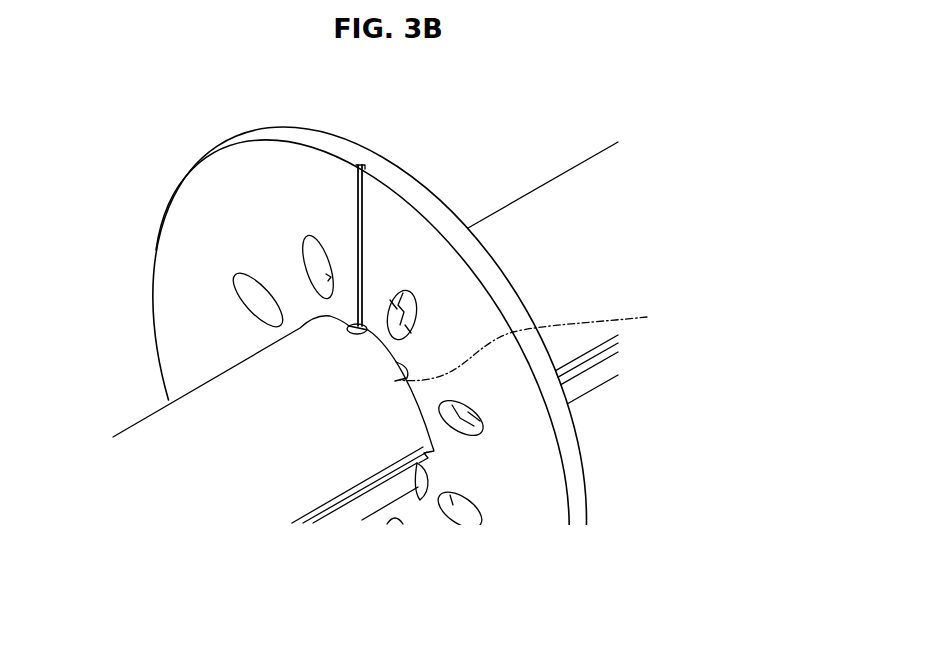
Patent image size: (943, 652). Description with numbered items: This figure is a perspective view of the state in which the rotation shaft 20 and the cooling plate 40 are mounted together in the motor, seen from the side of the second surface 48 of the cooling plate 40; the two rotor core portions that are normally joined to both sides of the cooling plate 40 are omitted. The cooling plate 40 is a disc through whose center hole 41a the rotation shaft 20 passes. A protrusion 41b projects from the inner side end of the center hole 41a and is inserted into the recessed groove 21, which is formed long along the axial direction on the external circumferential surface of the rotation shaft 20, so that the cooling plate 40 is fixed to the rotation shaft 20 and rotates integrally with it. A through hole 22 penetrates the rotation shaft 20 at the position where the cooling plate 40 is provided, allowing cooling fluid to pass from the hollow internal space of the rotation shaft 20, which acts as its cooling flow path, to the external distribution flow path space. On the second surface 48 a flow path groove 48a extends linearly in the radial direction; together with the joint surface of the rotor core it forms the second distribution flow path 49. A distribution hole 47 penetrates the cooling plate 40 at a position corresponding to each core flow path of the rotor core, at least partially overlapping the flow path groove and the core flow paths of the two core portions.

The rotation shaft 20 is at (537, 179).
The recessed groove 21 is at (340, 498).
The through hole 22 is at (353, 312).
The cooling plate 40 is at (597, 441).
The center hole 41a is at (543, 340).
The protrusion 41b is at (418, 470).
The distribution hole 47 is at (395, 291).
The second surface 48 is at (172, 245).
The flow path groove 48a is at (358, 223).
The second distribution flow path 49 is at (360, 245).